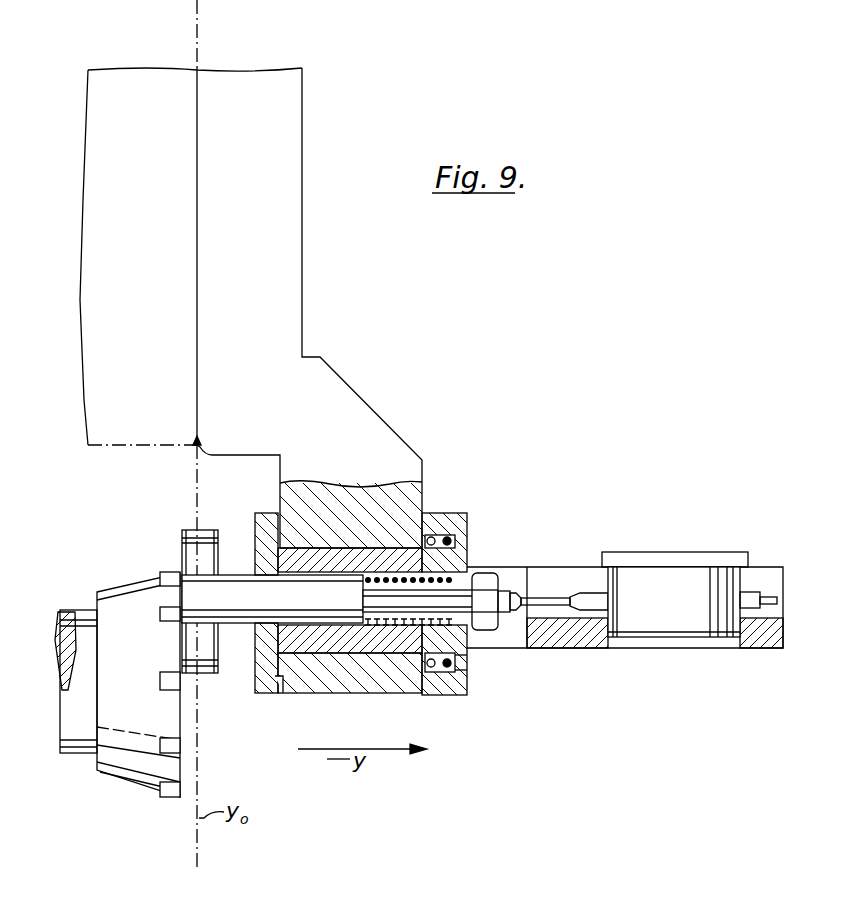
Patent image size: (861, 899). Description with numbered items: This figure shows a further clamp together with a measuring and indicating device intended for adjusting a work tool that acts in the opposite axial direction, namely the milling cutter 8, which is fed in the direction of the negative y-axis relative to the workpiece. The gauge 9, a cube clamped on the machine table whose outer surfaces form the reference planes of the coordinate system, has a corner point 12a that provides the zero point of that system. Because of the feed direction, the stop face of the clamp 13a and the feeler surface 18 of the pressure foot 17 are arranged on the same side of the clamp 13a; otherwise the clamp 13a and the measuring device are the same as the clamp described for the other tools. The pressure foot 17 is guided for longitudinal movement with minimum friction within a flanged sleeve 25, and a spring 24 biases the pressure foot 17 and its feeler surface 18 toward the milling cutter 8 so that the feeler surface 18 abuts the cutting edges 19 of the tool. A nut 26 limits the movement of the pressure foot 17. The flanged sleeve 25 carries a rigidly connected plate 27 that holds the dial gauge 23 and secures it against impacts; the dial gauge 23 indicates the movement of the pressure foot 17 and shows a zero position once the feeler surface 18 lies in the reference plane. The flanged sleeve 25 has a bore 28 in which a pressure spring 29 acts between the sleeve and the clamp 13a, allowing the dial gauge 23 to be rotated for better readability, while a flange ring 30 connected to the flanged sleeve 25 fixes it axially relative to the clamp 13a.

The gauge 9 is at (151, 88).
The clamp 13a is at (314, 284).
The corner point 12a is at (197, 447).
The feeler surface 18 is at (182, 547).
The pressure foot 17 is at (230, 593).
The flanged sleeve 25 is at (360, 672).
The flange ring 30 is at (272, 686).
The spring 24 is at (445, 552).
The bore 28 is at (447, 668).
The pressure spring 29 is at (466, 667).
The nut 26 is at (487, 580).
The plate 27 is at (566, 625).
The dial gauge 23 is at (643, 578).
The milling cutter 8 is at (128, 753).
The cutting edges 19 is at (185, 757).